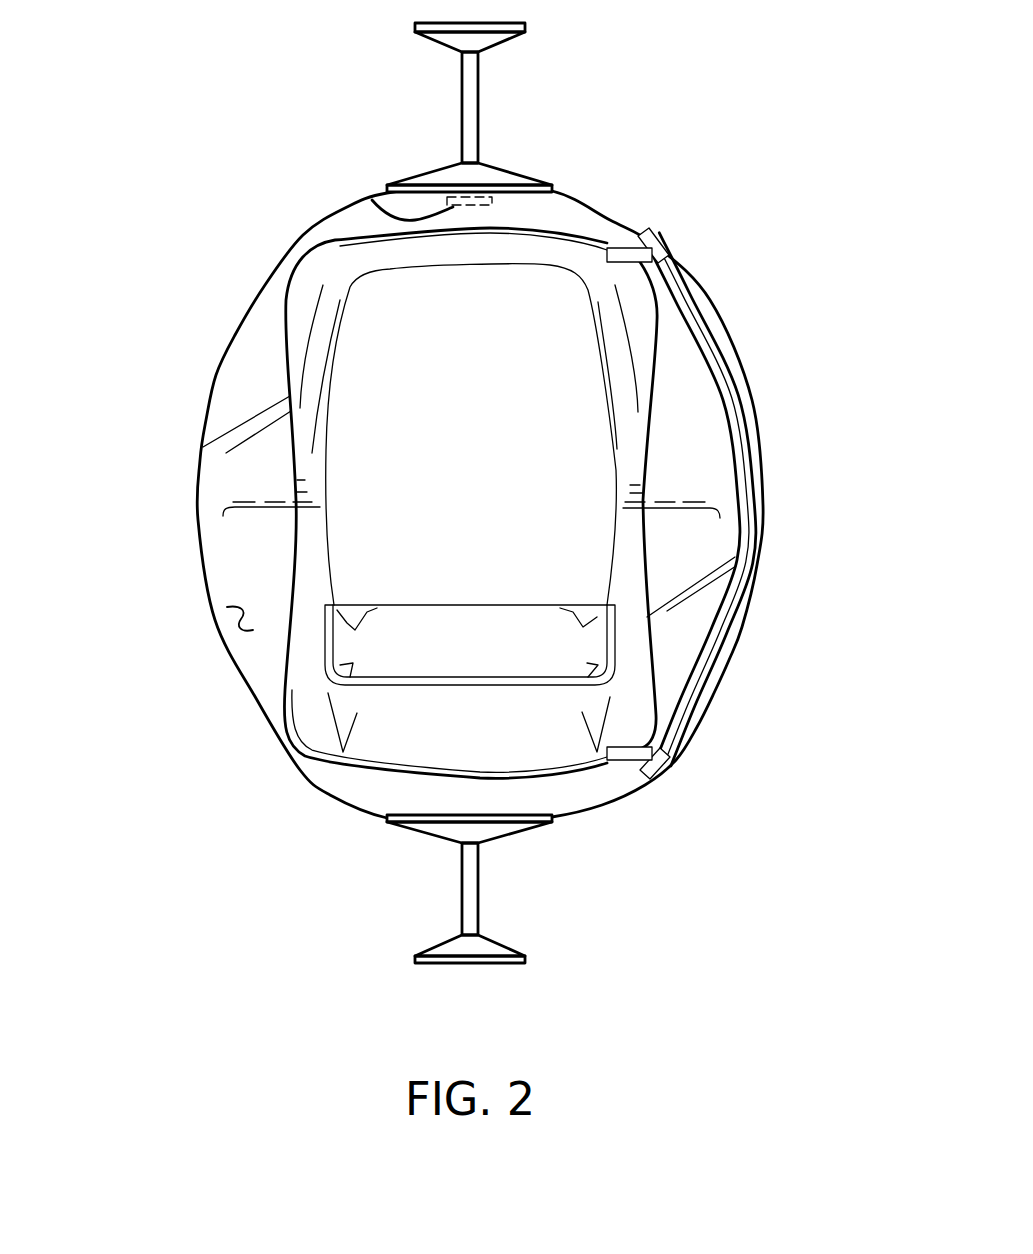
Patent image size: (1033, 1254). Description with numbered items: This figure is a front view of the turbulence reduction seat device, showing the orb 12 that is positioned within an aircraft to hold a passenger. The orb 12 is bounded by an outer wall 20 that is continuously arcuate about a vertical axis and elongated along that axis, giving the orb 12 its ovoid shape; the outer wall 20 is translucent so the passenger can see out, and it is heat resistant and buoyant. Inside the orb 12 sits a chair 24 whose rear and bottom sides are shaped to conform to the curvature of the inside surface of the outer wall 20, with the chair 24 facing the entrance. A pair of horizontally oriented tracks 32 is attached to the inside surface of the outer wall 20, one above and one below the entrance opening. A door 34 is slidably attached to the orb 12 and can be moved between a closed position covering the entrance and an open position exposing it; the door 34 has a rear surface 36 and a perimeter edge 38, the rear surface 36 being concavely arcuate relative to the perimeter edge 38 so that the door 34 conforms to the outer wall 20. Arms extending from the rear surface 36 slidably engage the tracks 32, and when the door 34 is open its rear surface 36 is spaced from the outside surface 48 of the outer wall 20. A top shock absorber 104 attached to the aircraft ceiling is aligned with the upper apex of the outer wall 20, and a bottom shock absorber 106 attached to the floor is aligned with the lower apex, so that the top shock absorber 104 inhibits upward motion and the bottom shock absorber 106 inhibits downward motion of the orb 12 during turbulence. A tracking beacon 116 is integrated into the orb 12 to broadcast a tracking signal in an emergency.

The orb 12 is at (219, 318).
The outer wall 20 is at (208, 418).
The chair 24 is at (368, 650).
The tracks 32 is at (507, 235).
The door 34 is at (708, 298).
The rear surface 36 is at (748, 423).
The perimeter edge 38 is at (643, 232).
The outside surface 48 is at (238, 616).
The top shock absorber 104 is at (432, 127).
The bottom shock absorber 106 is at (438, 891).
The tracking beacon 116 is at (453, 207).